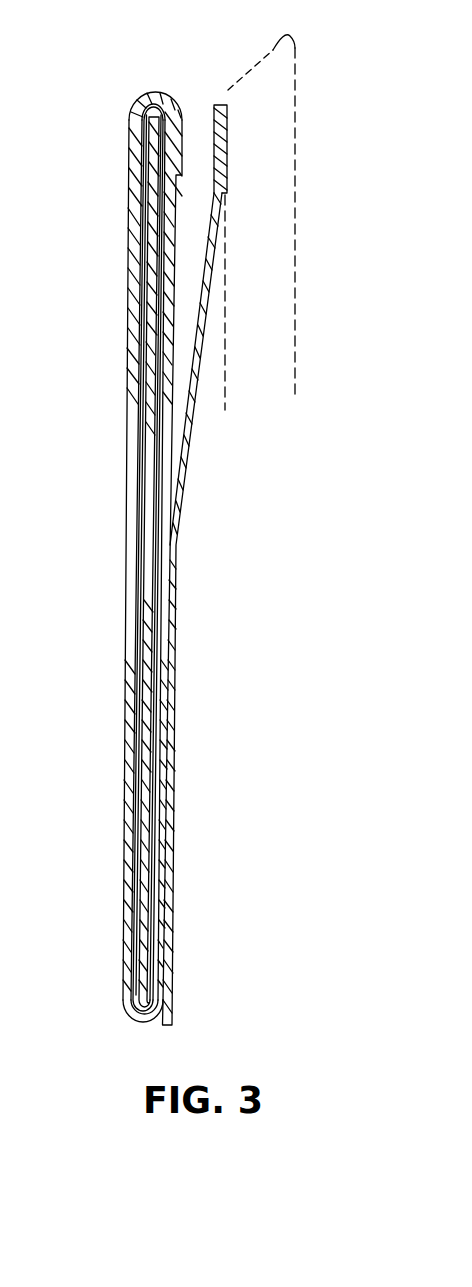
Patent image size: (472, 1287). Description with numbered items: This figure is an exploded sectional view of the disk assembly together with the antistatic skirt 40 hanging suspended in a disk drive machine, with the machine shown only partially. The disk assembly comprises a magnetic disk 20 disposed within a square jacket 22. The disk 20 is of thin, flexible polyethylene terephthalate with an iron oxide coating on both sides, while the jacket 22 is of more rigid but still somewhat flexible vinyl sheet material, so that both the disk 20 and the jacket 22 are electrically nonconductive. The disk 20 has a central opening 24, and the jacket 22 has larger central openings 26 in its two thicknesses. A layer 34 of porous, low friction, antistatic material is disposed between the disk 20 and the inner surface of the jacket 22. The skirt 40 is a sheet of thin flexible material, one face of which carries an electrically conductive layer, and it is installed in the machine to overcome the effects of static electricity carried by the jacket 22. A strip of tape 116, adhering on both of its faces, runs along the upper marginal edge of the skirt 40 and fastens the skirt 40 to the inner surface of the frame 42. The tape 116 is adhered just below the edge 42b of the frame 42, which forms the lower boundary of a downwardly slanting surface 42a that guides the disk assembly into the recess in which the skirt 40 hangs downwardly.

The magnetic disk 20 is at (147, 640).
The jacket 22 is at (128, 309).
The central opening 24 is at (141, 448).
The central openings 26 is at (133, 411).
The layer 34 is at (136, 85).
The skirt 40 is at (172, 540).
The frame 42 is at (293, 128).
The downwardly slanting surface 42a is at (260, 60).
The edge 42b is at (229, 83).
The strip of tape 116 is at (236, 187).